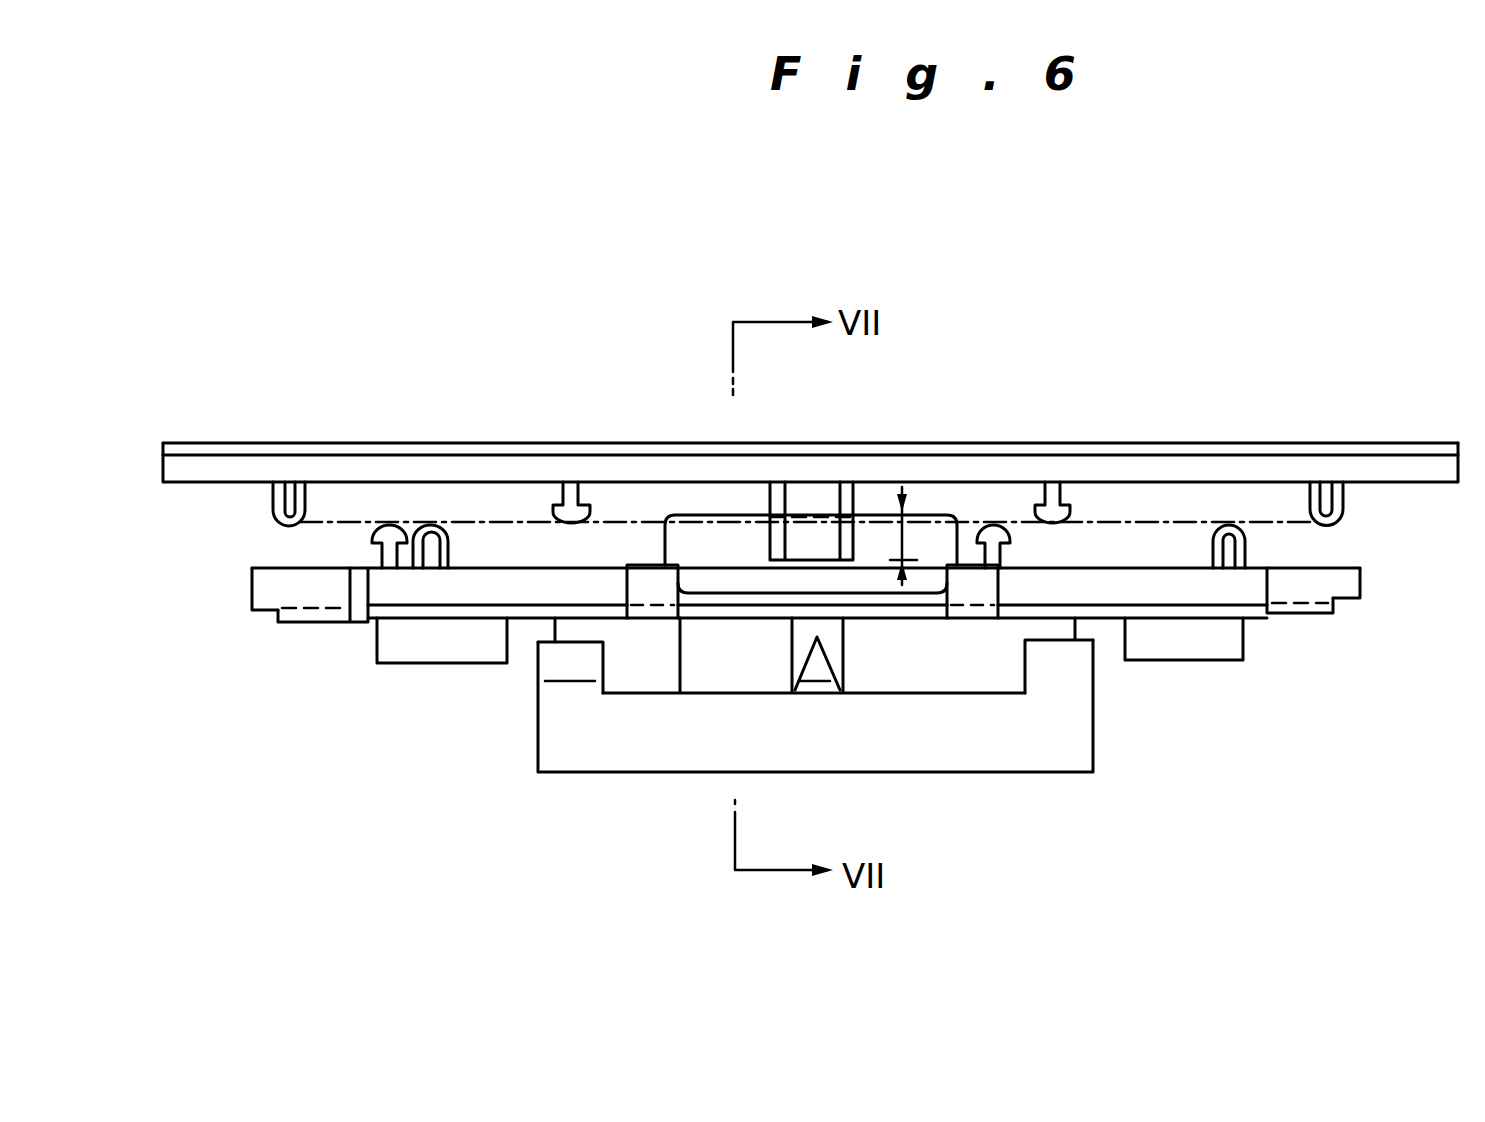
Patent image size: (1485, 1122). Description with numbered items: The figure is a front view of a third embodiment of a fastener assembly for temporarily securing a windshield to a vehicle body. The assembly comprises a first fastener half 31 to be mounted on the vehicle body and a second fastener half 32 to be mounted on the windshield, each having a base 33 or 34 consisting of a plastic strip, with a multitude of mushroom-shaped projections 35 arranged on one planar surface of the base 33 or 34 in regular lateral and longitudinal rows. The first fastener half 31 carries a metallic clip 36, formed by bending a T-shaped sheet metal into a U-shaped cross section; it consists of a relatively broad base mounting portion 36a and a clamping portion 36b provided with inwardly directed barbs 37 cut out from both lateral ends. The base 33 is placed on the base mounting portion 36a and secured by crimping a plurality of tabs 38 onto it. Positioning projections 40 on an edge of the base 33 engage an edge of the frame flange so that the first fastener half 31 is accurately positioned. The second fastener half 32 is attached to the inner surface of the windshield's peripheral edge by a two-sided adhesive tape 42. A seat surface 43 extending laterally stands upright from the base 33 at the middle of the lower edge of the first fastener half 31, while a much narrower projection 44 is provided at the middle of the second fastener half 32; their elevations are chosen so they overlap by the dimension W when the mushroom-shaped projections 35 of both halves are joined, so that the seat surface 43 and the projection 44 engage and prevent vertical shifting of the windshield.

The first fastener half 31 is at (1285, 622).
The second fastener half 32 is at (1236, 448).
The base 33 is at (1350, 598).
The base 34 is at (1358, 467).
The mushroom-shaped projections 35 is at (1343, 522).
The metallic clip 36 is at (905, 731).
The base mounting portion 36a is at (1255, 618).
The clamping portion 36b is at (1075, 768).
The barbs 37 is at (540, 657).
The tabs 38 is at (643, 577).
The positioning projections 40 is at (411, 665).
The two-sided adhesive tape 42 is at (340, 448).
The seat surface 43 is at (703, 537).
The projection 44 is at (777, 541).
The overlap dimension W is at (907, 538).